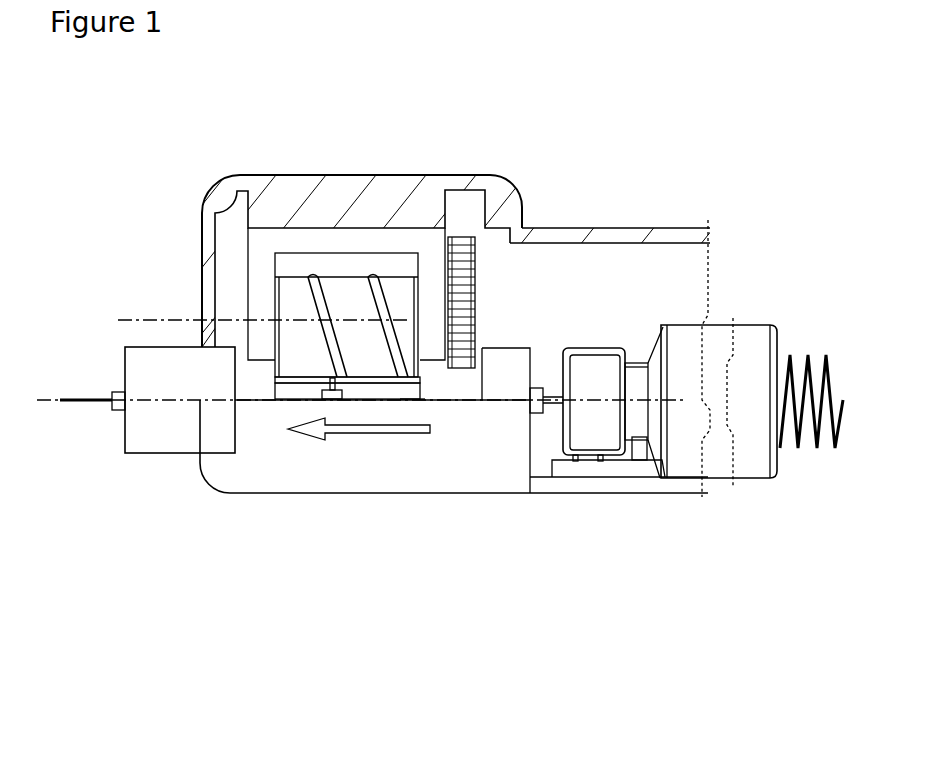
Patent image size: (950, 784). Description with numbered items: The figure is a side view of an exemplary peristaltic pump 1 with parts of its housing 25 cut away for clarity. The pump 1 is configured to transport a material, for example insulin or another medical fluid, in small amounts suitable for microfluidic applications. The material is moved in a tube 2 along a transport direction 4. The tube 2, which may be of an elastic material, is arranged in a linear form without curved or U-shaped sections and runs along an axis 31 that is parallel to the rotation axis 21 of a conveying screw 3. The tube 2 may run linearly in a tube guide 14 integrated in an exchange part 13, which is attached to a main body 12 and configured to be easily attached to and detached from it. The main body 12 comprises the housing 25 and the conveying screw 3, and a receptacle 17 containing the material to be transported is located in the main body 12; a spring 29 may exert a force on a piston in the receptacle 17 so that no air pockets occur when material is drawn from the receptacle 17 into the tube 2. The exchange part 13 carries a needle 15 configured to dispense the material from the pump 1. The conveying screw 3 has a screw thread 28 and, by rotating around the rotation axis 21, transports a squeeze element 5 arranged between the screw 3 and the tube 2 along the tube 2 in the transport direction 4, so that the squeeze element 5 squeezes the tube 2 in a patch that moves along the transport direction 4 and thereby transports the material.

The peristaltic pump 1 is at (170, 150).
The tube 2 is at (558, 455).
The conveying screw 3 is at (362, 300).
The transport direction 4 is at (380, 432).
The squeeze element 5 is at (330, 400).
The main body 12 is at (456, 168).
The exchange part 13 is at (290, 460).
The tube guide 14 is at (413, 406).
The needle 15 is at (80, 405).
The receptacle 17 is at (683, 423).
The rotation axis 21 is at (133, 320).
The housing 25 is at (555, 228).
The screw thread 28 is at (318, 277).
The spring 29 is at (818, 383).
The axis 31 is at (143, 398).